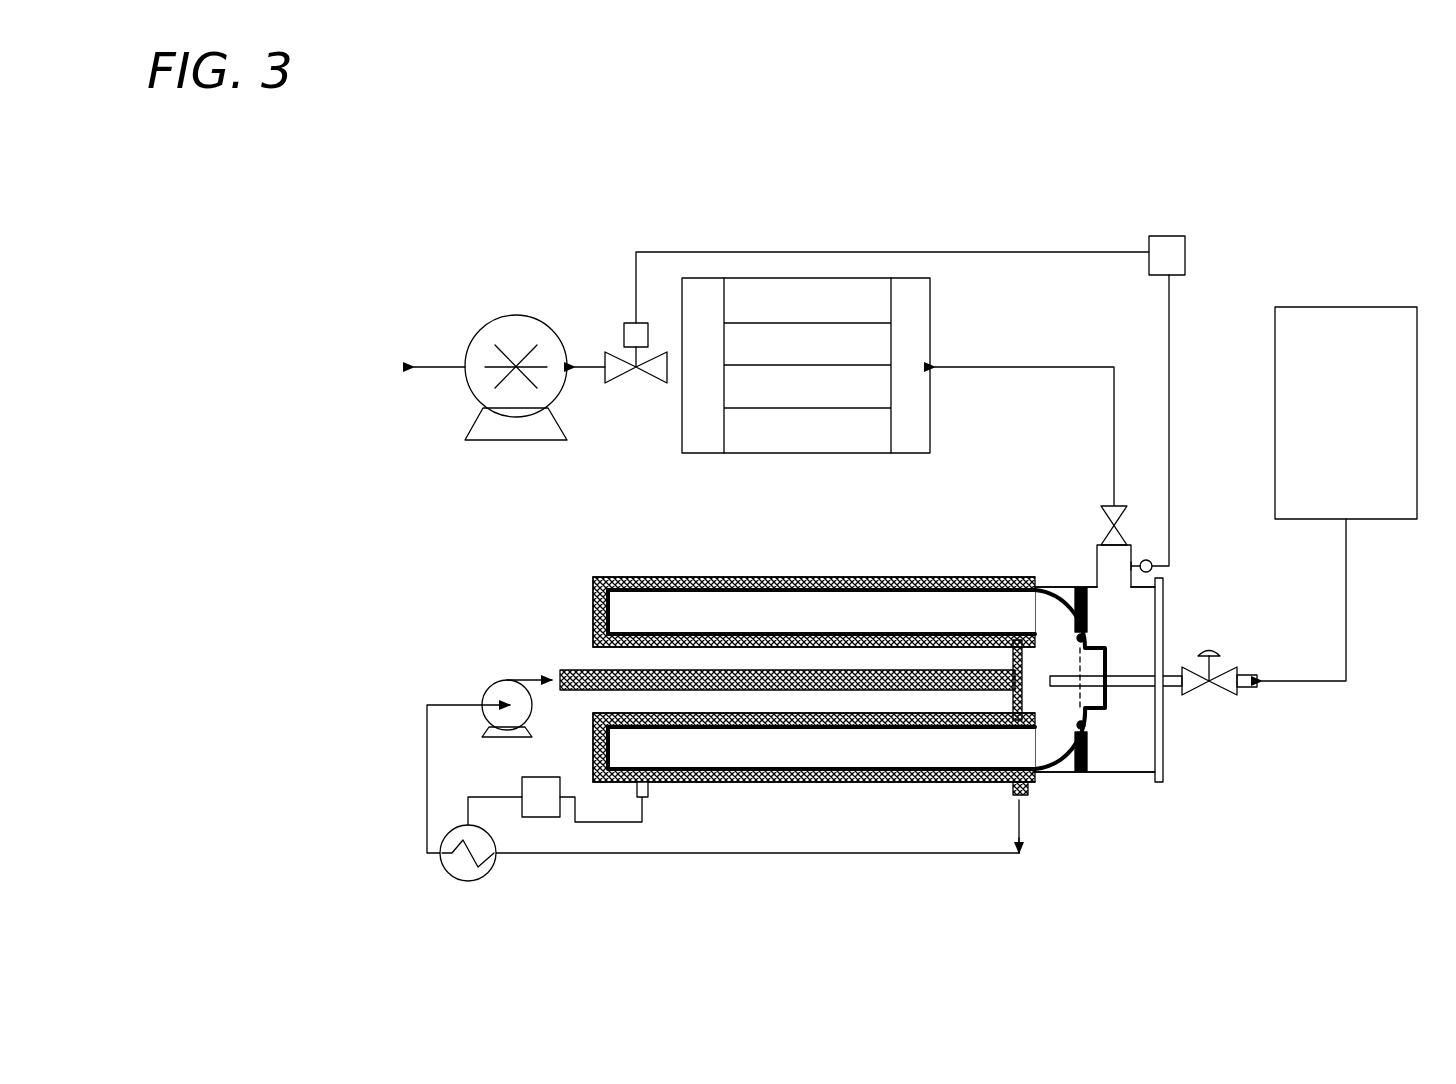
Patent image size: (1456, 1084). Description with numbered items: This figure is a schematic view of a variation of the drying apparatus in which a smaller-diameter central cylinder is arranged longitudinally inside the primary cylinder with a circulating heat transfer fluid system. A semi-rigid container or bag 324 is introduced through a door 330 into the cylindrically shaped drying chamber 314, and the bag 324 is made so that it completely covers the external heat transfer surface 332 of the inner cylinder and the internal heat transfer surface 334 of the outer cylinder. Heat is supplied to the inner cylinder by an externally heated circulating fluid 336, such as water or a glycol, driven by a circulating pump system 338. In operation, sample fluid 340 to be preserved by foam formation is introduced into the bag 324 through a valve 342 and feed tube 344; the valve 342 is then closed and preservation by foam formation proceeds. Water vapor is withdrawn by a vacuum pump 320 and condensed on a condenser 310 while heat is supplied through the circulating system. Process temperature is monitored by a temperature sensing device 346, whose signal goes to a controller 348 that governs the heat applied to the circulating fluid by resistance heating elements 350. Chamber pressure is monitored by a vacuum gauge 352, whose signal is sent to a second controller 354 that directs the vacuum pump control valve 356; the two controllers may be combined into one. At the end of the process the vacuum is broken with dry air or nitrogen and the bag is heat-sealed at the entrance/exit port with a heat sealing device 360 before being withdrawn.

The condenser 310 is at (802, 278).
The drying chamber 314 is at (1120, 772).
The vacuum pump 320 is at (500, 318).
The semi-rigid container or bag 324 is at (1040, 745).
The door 330 is at (1163, 725).
The external heat transfer surface of the inner cylinder 332 is at (853, 633).
The internal heat transfer surface of the outer cylinder 334 is at (790, 578).
The externally heated circulating fluid 336 is at (677, 677).
The circulating pump system 338 is at (427, 755).
The sample fluid 340 is at (1400, 519).
The valve 342 is at (1238, 665).
The feed tube 344 is at (1145, 675).
The temperature sensing device 346 is at (648, 795).
The controller 348 is at (522, 780).
The resistance heating elements 350 is at (482, 878).
The vacuum gauge 352 is at (1151, 561).
The second controller 354 is at (1162, 236).
The vacuum pump control valve 356 is at (622, 327).
The heat sealing device 360 is at (1083, 587).